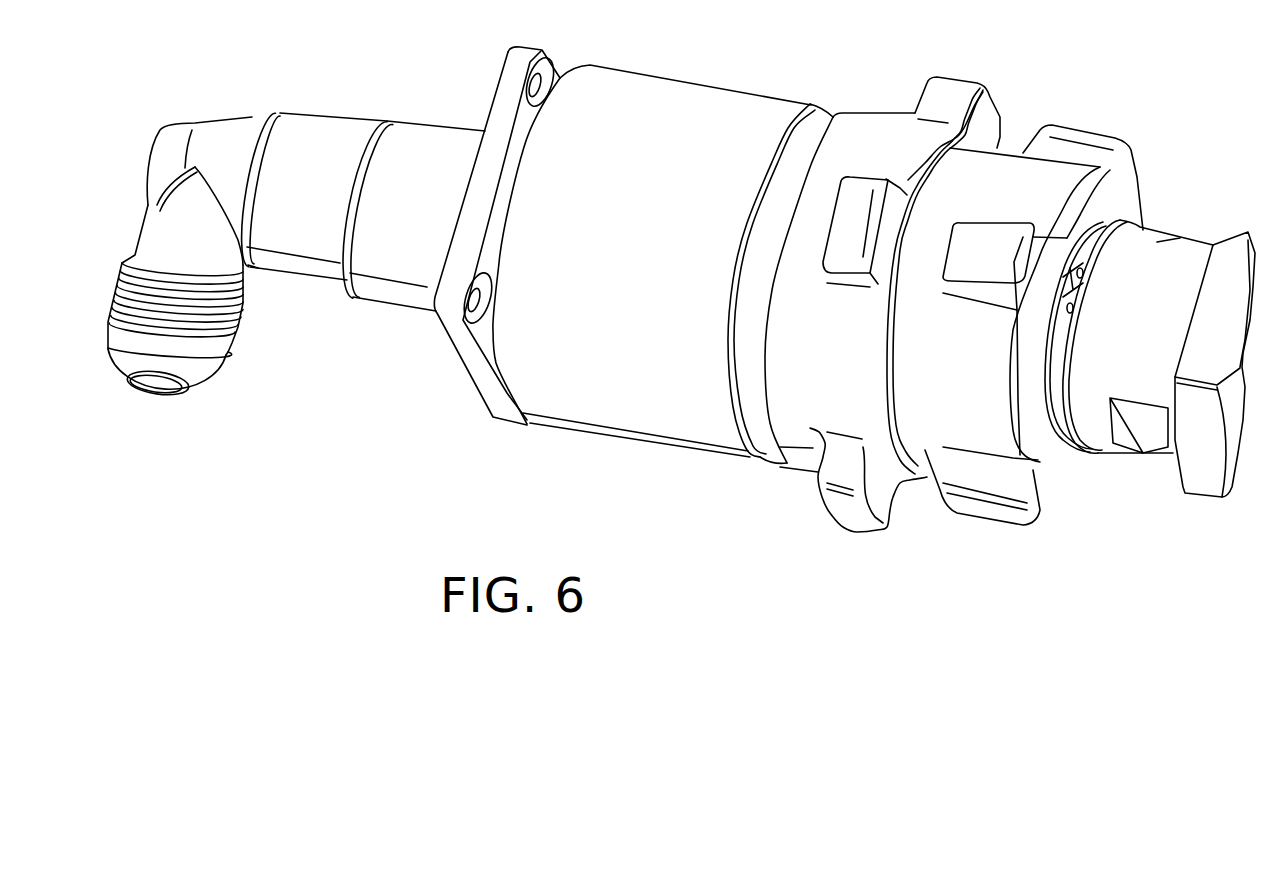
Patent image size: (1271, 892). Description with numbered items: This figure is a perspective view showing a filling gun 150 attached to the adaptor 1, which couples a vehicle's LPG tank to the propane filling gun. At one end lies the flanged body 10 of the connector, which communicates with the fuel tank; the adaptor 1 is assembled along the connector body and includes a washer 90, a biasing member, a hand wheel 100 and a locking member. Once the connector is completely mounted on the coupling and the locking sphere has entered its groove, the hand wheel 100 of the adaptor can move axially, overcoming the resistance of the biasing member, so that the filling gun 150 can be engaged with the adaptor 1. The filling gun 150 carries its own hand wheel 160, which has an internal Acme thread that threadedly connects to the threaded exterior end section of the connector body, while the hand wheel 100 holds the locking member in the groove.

The adaptor 1 is at (710, 70).
The flanged body 10 is at (330, 130).
The washer 90 is at (607, 418).
The hand wheel 100 is at (803, 453).
The hand wheel 160 is at (920, 457).
The filling gun 150 is at (1098, 432).